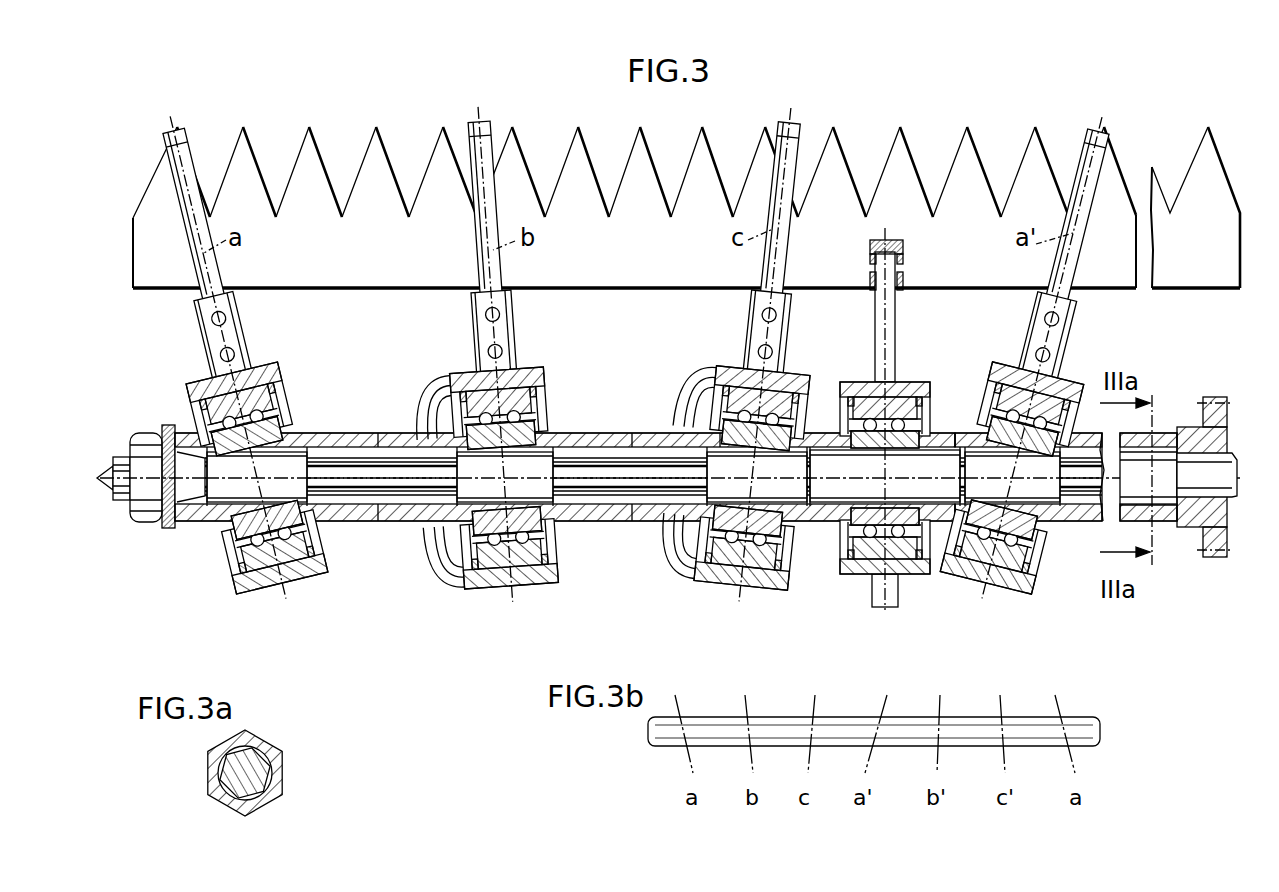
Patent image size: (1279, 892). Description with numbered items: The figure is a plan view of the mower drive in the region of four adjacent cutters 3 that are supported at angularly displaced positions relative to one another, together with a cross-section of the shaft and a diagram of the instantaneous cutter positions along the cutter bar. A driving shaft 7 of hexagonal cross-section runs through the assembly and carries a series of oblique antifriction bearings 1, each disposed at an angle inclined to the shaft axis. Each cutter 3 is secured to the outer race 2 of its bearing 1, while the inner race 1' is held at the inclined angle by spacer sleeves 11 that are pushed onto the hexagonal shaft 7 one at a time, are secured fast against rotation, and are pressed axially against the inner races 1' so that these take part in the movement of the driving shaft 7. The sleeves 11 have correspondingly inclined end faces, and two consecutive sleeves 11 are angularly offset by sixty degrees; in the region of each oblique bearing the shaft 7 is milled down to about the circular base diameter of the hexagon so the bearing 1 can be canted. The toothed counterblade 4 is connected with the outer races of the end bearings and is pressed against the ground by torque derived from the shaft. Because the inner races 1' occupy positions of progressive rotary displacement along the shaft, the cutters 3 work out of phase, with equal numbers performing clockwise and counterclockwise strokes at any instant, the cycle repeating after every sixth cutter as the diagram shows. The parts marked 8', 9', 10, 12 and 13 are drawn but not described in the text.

In FIG. 3, the antifriction bearing 1 is at (249, 357).
In FIG. 3, the inner race 1' is at (267, 419).
In FIG. 3, the outer race 2 is at (278, 368).
In FIG. 3, the cutter 3 is at (198, 263).
In FIG. 3, the counterblade 4 is at (1110, 267).
In FIG. 3, the driving shaft 7 is at (387, 490).
In FIG. 3A, the driving shaft 7 is at (253, 765).
In FIG. 3, the bearing housing 8' is at (875, 424).
In FIG. 3, the connecting bolt 9' is at (908, 430).
In FIG. 3, the drive coupling flange 10 is at (1218, 523).
In FIG. 3, the spacer sleeve 11 is at (598, 442).
In FIG. 3A, the spacer sleeve 11 is at (210, 778).
In FIG. 3, the tube section 12 is at (938, 442).
In FIG. 3, the hexagonal bar 13 is at (590, 508).
In FIG. 3A, the hexagonal bar 13 is at (243, 803).